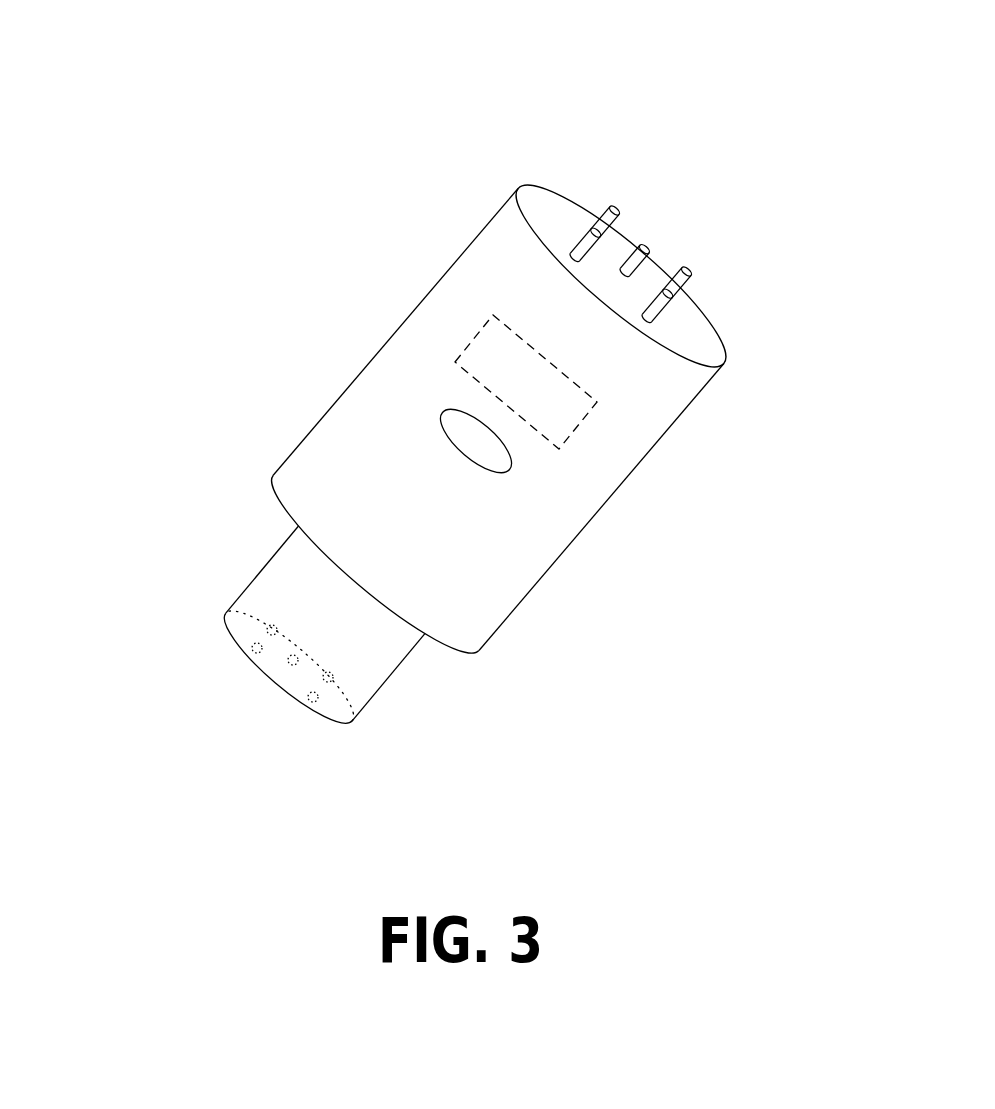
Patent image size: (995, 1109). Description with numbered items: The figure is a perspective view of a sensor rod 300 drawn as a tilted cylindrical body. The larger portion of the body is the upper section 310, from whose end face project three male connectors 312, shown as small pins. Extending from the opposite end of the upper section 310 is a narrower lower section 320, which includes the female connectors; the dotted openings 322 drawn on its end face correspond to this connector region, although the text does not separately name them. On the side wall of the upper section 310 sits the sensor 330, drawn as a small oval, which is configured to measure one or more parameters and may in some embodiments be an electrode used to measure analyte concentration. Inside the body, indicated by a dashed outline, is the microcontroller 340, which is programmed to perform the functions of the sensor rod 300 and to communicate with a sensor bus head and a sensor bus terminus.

The sensor rod 300 is at (103, 105).
The upper section 310 is at (682, 337).
The male connectors 312 is at (693, 273).
The lower section 320 is at (343, 708).
The mouthpiece openings 322 is at (270, 633).
The sensor 330 is at (510, 467).
The microcontroller 340 is at (578, 425).